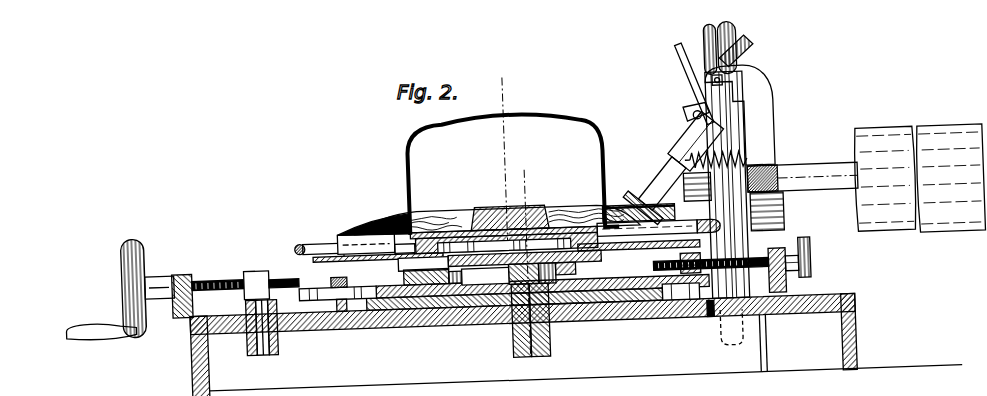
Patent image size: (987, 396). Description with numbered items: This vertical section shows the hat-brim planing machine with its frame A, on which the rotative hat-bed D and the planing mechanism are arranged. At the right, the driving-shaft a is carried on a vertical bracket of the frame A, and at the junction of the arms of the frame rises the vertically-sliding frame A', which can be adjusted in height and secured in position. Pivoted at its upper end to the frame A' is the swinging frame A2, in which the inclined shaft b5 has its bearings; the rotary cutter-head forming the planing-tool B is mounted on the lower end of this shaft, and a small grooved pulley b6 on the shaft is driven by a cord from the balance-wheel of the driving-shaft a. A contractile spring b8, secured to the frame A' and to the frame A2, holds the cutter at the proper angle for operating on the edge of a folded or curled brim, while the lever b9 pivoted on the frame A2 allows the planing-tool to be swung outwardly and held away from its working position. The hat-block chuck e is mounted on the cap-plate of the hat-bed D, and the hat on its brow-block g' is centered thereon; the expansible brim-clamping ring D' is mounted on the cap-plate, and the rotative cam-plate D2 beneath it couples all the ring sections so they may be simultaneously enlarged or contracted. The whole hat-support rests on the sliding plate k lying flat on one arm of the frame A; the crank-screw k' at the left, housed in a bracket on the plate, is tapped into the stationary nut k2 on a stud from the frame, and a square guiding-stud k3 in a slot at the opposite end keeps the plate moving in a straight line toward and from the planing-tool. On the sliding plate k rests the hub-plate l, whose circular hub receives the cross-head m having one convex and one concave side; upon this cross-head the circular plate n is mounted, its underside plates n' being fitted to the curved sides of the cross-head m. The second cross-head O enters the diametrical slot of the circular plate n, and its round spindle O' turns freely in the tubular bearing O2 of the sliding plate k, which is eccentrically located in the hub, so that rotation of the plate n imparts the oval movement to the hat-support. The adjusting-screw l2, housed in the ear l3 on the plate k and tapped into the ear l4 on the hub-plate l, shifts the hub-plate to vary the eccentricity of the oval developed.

The frame A is at (564, 343).
The vertically-sliding frame A' is at (745, 159).
The swinging frame A2 is at (690, 152).
The planing-tool B is at (633, 204).
The hat-bed D is at (313, 241).
The brim-clamping ring D' is at (368, 233).
The cam-plate D2 is at (378, 265).
The second cross-head O is at (525, 262).
The spindle O' is at (539, 273).
The tubular bearing O2 is at (520, 320).
The driving-shaft a is at (802, 168).
The inclined shaft b5 is at (661, 193).
The grooved pulley b6 is at (697, 129).
The contractile spring b8 is at (754, 177).
The lever b9 is at (682, 84).
The hat-block chuck e is at (509, 209).
The brow-block g' is at (497, 209).
The sliding plate k is at (440, 318).
The crank-screw k' is at (217, 275).
The stationary nut k2 is at (261, 313).
The guiding-stud k3 is at (735, 327).
The hub-plate l is at (533, 280).
The adjusting-screw l2 is at (805, 256).
The ear l3 is at (771, 261).
The ear l4 is at (690, 316).
The cross-head m is at (486, 276).
The circular plate n is at (423, 265).
The plates n' is at (500, 271).